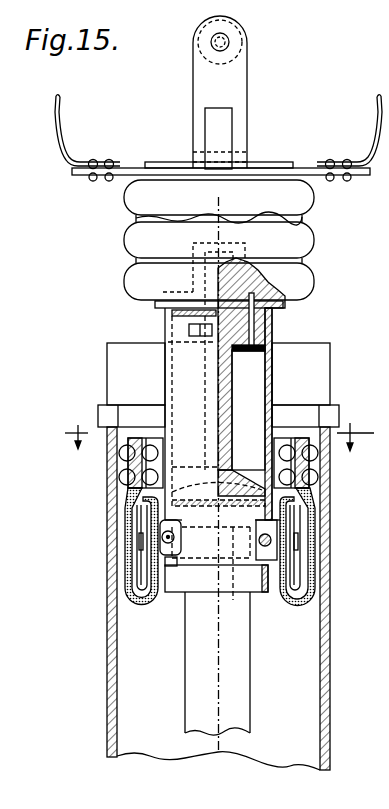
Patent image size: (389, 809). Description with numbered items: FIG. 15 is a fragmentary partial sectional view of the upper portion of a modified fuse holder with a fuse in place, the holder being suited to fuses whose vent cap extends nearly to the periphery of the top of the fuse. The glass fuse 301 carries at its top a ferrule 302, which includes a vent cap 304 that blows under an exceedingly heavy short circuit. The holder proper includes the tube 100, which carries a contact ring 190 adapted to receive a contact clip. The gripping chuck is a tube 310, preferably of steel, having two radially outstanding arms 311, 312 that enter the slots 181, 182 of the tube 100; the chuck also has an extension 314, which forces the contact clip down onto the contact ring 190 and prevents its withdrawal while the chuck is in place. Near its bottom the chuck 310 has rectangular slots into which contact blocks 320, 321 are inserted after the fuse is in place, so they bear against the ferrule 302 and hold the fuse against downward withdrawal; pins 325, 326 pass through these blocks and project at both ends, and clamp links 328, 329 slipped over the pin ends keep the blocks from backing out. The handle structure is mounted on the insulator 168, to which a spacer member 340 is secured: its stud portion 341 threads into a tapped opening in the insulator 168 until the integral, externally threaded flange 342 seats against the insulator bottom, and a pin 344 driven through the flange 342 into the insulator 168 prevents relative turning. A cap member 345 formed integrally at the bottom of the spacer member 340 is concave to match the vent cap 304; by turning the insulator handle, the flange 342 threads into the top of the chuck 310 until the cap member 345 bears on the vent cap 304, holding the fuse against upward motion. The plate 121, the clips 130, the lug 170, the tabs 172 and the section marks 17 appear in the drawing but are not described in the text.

The tube 100 is at (329, 668).
The mounting plate 121 is at (125, 168).
The spring clip 130 is at (155, 575).
The insulator 168 is at (300, 230).
The mounting lug 170 is at (249, 56).
The retaining tab 172 is at (63, 98).
The slot 181 is at (330, 370).
The slot 182 is at (115, 360).
The contact ring 190 is at (310, 463).
The glass fuse 301 is at (203, 668).
The ferrule 302 is at (242, 513).
The vent cap 304 is at (205, 478).
The tube 310 is at (273, 360).
The arm 311 is at (143, 410).
The arm 312 is at (300, 410).
The extension 314 is at (188, 333).
The contact block 320 is at (148, 606).
The contact block 321 is at (313, 566).
The pin 325 is at (160, 547).
The pin 326 is at (278, 542).
The clamp link 328 is at (233, 591).
The clamp link 329 is at (189, 537).
The spacer member 340 is at (233, 403).
The stud portion 341 is at (227, 393).
The flange 342 is at (255, 325).
The pin 344 is at (273, 317).
The cap member 345 is at (231, 467).
The section line 17- 17 is at (218, 433).